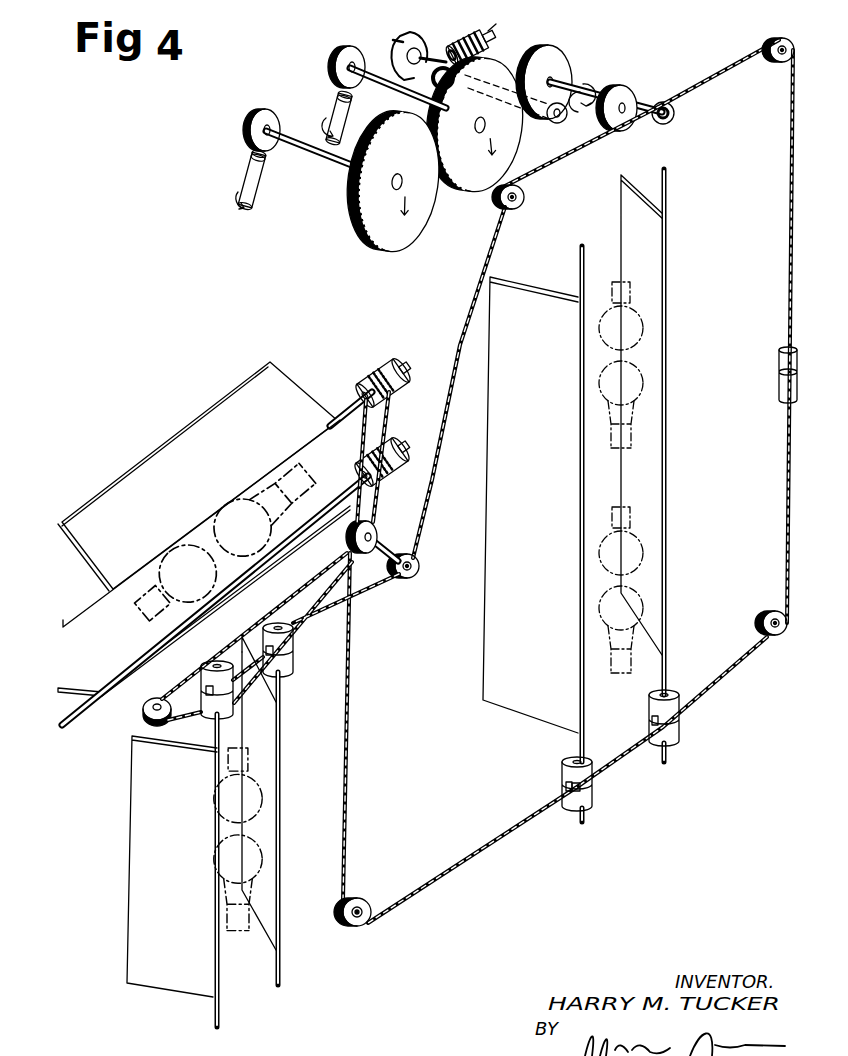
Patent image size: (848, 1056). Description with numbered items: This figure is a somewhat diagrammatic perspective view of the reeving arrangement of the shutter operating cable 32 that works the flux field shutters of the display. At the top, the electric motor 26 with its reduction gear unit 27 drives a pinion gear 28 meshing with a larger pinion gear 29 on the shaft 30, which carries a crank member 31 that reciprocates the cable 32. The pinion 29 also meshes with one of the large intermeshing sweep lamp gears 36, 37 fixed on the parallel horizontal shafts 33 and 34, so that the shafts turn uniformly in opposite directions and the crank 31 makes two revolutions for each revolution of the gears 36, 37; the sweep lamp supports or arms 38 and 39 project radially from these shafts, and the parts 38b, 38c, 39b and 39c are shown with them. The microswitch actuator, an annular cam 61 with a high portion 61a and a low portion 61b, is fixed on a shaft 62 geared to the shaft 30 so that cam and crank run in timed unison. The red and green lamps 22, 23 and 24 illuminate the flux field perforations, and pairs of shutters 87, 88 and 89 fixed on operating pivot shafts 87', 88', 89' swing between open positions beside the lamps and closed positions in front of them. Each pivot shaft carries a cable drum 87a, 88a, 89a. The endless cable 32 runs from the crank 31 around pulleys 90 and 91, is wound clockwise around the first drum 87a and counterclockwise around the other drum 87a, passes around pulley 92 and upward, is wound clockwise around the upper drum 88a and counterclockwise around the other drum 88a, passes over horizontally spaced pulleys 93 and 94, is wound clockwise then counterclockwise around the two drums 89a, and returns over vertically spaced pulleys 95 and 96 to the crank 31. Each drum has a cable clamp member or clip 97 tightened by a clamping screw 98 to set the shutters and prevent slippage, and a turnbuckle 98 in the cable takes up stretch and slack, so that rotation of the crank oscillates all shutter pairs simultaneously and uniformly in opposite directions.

The lamps 22 is at (645, 372).
The lamps 23 is at (228, 525).
The lamps 24 is at (260, 862).
The electric motor 26 is at (549, 21).
The reduction gear unit 27 is at (486, 49).
The pinion gear 28 is at (550, 120).
The larger pinion gear 29 is at (557, 64).
The shaft 30 is at (585, 110).
The crank member 31 is at (650, 93).
The cable 32 is at (427, 534).
The shaft 33 is at (318, 153).
The shaft 34 is at (366, 72).
The pinion gear 36 is at (396, 236).
The pinion gear 37 is at (488, 168).
The sweep lamp support 38 is at (254, 160).
The handle arrow 38b is at (250, 199).
The knob 38c is at (249, 131).
The sweep lamp support 39 is at (336, 93).
The handle arrow 39b is at (347, 115).
The knob 39c is at (335, 56).
The annular cam 61 is at (421, 60).
The high portion 61a is at (480, 37).
The low portion 61b is at (395, 40).
The shaft 62 is at (412, 34).
The shutters 87 is at (579, 454).
The operating pivot shaft 87' is at (611, 495).
The cable drum 87a is at (668, 697).
The shutters 88 is at (201, 523).
The operating pivot shaft 88' is at (197, 543).
The cable drum 88a is at (392, 372).
The shutters 89 is at (198, 824).
The operating pivot shaft 89' is at (249, 832).
The cable drum 89a is at (218, 665).
The pulley 90 is at (778, 62).
The pulley 91 is at (762, 623).
The pulley 92 is at (372, 915).
The pulley 93 is at (355, 541).
The pulley 94 is at (144, 713).
The pulley 95 is at (420, 570).
The pulley 96 is at (524, 197).
The cable clamp member 97 is at (200, 697).
The clamping screw 98 is at (778, 398).